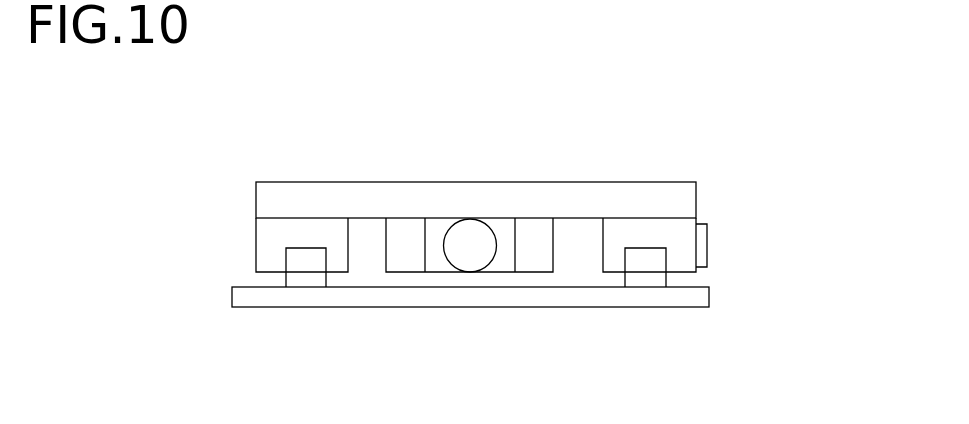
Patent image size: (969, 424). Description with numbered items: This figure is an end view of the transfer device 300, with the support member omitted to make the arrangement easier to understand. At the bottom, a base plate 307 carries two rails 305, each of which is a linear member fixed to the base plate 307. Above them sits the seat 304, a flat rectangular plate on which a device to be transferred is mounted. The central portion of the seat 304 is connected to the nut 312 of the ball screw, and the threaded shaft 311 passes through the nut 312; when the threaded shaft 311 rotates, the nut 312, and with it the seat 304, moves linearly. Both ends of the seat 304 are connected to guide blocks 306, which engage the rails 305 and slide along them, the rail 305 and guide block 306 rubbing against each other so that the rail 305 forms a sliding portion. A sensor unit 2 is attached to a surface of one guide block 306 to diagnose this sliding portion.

The transfer device 300 is at (250, 143).
The seat 304 is at (616, 206).
The guide block 306 is at (269, 248).
The sensor unit 2 is at (705, 232).
The nut 312 is at (400, 252).
The threaded shaft 311 is at (470, 247).
The rail 305 is at (308, 250).
The base plate 307 is at (553, 297).